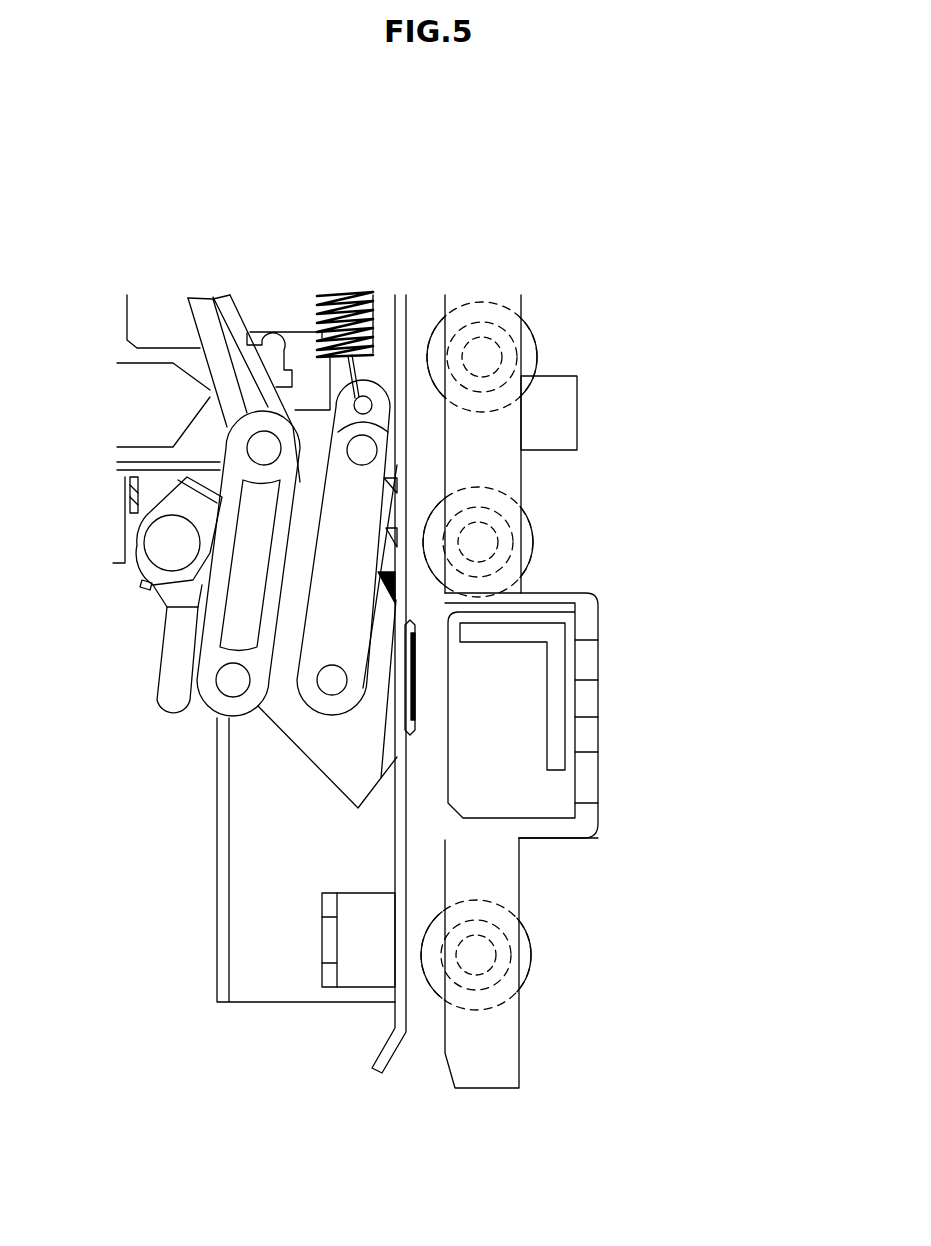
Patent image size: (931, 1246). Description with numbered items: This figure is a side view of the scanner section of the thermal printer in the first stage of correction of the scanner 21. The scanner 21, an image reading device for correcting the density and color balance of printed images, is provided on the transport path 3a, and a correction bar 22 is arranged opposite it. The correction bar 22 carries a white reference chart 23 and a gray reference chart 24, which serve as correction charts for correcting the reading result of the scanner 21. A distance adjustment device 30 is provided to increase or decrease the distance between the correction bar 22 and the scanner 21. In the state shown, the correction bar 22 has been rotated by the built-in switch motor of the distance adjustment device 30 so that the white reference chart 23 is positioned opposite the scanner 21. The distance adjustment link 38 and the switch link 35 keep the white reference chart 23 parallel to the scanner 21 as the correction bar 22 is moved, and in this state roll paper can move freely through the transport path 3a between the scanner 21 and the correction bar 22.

The distance adjustment device 30 is at (123, 262).
The distance adjustment link 38 is at (293, 482).
The switch link 35 is at (378, 475).
The gray reference chart 24 is at (388, 588).
The white reference chart 23 is at (413, 680).
The scanner 21 is at (578, 722).
The correction bar 22 is at (303, 743).
The transport path 3a is at (537, 880).